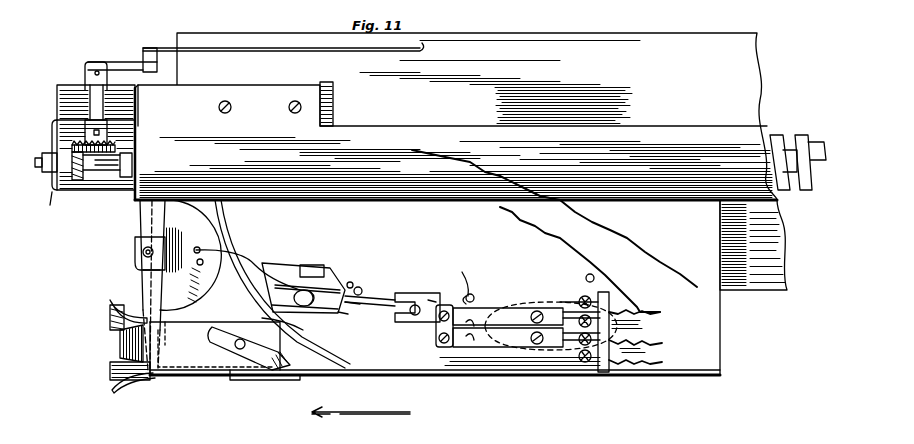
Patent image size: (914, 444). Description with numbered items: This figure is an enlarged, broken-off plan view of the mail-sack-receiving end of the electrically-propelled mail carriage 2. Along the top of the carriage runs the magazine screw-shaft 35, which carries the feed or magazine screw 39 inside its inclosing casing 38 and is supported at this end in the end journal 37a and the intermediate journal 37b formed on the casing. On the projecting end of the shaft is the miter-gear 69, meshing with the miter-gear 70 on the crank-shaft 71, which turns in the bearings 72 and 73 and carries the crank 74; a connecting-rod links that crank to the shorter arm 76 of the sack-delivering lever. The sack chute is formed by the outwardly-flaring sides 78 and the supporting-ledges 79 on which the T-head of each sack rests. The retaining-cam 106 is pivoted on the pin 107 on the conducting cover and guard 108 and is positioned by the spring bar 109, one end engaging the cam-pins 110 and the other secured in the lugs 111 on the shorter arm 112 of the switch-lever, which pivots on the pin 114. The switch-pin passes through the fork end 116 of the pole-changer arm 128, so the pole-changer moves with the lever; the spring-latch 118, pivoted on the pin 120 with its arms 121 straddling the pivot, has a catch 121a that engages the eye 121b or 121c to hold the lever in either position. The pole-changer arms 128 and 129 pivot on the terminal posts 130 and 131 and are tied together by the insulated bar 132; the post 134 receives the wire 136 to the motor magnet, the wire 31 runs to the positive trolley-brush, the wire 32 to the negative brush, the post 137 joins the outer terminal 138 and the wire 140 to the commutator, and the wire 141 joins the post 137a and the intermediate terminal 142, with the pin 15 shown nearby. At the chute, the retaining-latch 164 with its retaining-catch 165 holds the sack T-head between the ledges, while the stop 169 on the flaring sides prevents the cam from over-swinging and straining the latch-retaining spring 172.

The machine body 2 is at (461, 161).
The pin 15 is at (432, 300).
The wire 31 is at (505, 209).
The wire 32 is at (544, 214).
The magazine screw-shaft 35 is at (105, 168).
The end journal 37a is at (52, 206).
The intermediate journal 37b is at (128, 178).
The inclosing casing 38 is at (560, 160).
The feed or magazine screw 39 is at (778, 137).
The miter-gear 69 is at (76, 180).
The miter-gear 70 is at (120, 143).
The crank-shaft 71 is at (89, 100).
The bearing 72 is at (62, 122).
The bearing 73 is at (85, 79).
The crank 74 is at (125, 62).
The shorter arm 76 is at (248, 56).
The outwardly-flaring sides or walls 78 is at (120, 302).
The supporting-ledges 79 is at (115, 322).
The retaining-cam 106 is at (197, 286).
The pin 107 is at (142, 250).
The conducting cover and guard 108 is at (142, 270).
The spring or yielding bar 109 is at (234, 250).
The cam-pins 110 is at (196, 246).
The lugs 111 is at (312, 267).
The shorter arm 112 is at (295, 317).
The pin 114 is at (294, 299).
The fork end 116 is at (403, 296).
The spring-latch 118 is at (348, 315).
The pin 120 is at (345, 290).
The arms or bifurcations 121 is at (272, 262).
The catch 121a is at (348, 306).
The eye or catch-opening 121b is at (362, 289).
The eye or catch-opening 121c is at (353, 271).
The arm 128 is at (480, 310).
The arm 129 is at (540, 336).
The terminal post 130 is at (539, 316).
The terminal post 131 is at (542, 350).
The insulated bar 132 is at (436, 330).
The post 134 is at (615, 388).
The wire 136 is at (662, 343).
The post 137 is at (582, 298).
The post 137a is at (418, 306).
The outer terminal 138 is at (470, 337).
The wire 140 is at (660, 312).
The wire 141 is at (662, 362).
The intermediate terminal 142 is at (500, 308).
The retaining-latch 164 is at (186, 365).
The retaining-catch 165 is at (120, 346).
The stop 169 is at (240, 380).
The latch-retaining spring 172 is at (263, 352).